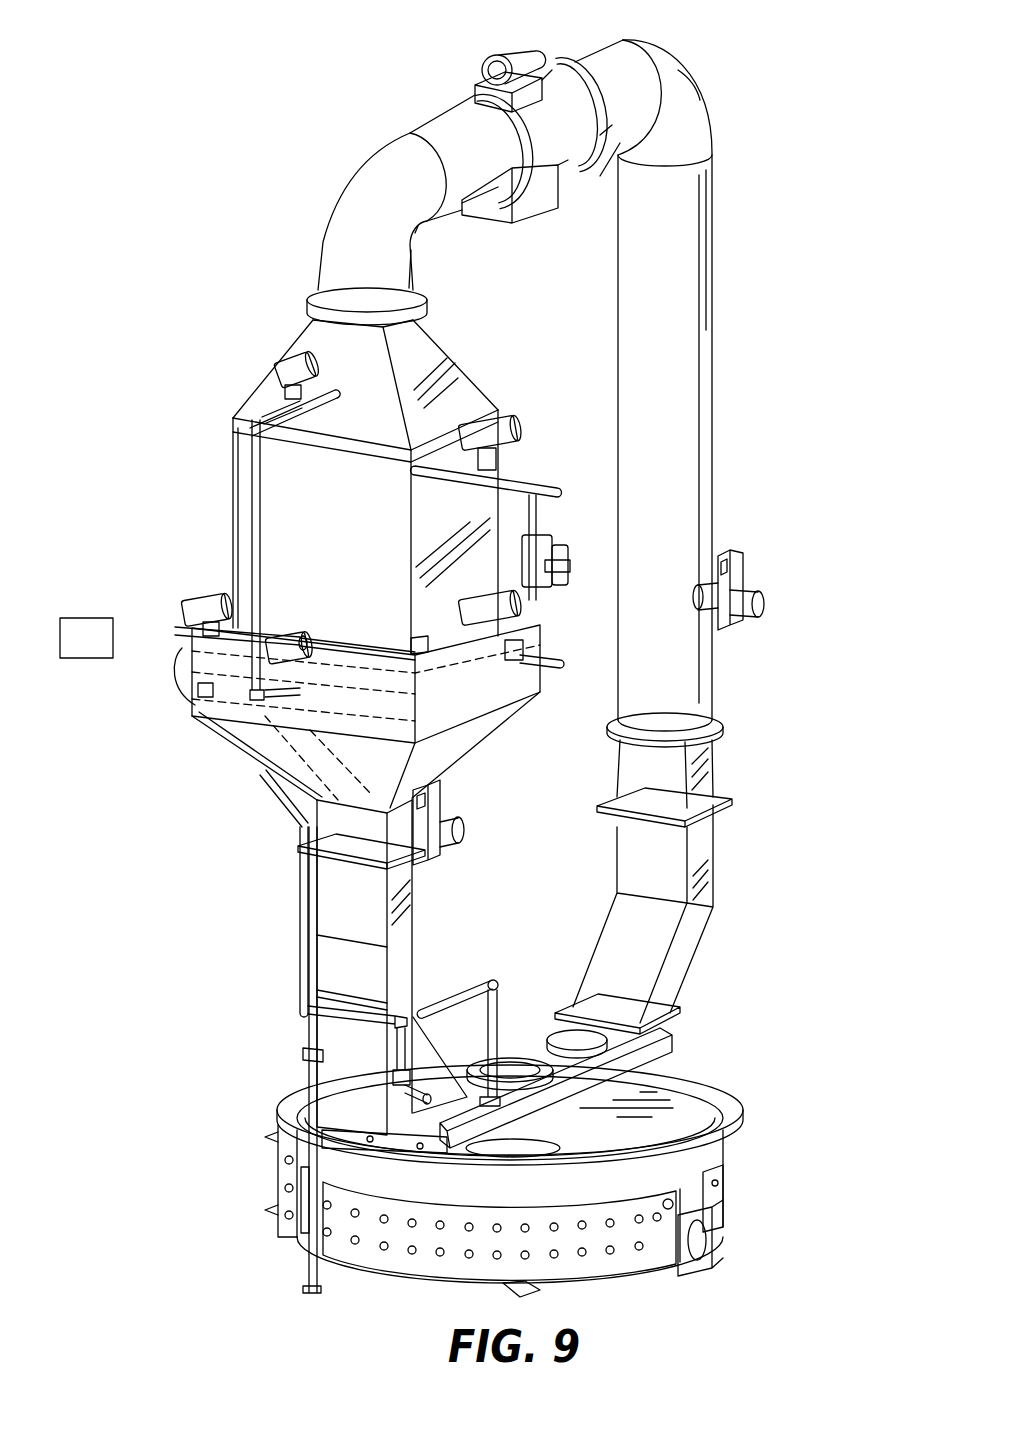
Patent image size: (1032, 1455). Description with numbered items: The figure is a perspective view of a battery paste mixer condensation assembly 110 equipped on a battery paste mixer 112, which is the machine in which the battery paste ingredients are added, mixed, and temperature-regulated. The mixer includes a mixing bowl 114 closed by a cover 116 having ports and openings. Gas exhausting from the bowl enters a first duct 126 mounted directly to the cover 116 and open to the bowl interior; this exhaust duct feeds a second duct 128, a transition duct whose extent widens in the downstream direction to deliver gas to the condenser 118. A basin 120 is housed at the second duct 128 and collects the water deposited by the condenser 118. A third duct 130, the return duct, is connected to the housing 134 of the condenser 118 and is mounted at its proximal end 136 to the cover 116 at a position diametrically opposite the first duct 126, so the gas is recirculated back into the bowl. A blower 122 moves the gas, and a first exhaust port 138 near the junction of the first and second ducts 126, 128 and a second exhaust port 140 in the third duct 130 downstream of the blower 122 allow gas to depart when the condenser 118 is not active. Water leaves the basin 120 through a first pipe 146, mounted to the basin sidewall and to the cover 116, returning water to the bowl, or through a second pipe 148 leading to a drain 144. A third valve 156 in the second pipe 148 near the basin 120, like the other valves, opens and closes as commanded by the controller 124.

The battery paste mixer condensation assembly 110 is at (766, 345).
The battery paste mixer 112 is at (744, 1196).
The mixing bowl 114 is at (425, 1253).
The cover 116 is at (683, 1093).
The condenser 118 is at (222, 500).
The basin 120 is at (453, 697).
The blower 122 is at (553, 121).
The controller 124 is at (183, 638).
The first duct 126 is at (415, 903).
The second duct 128 is at (457, 767).
The third duct 130 is at (713, 220).
The housing 134 is at (226, 452).
The proximal end 136 is at (683, 1020).
The first exhaust port 138 is at (447, 847).
The second exhaust port 140 is at (757, 588).
The drain 144 is at (310, 1287).
The first pipe 146 is at (302, 898).
The second pipe 148 is at (310, 1057).
The third valve 156 is at (360, 727).